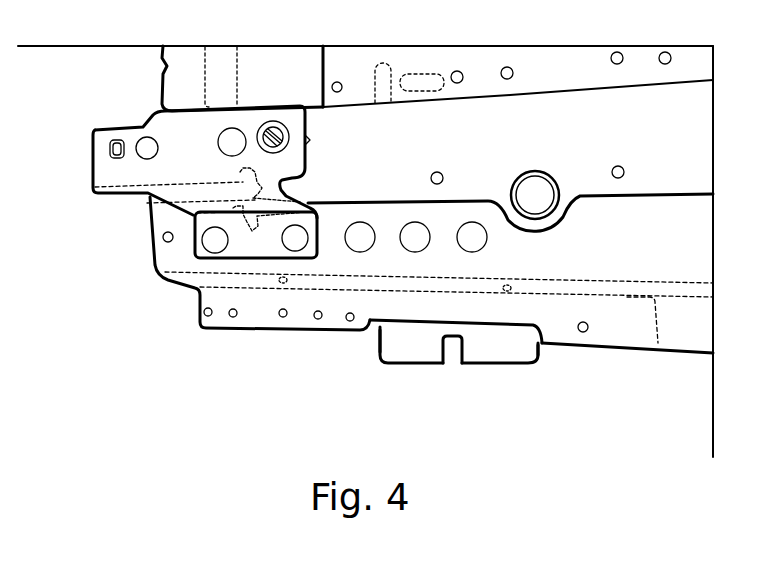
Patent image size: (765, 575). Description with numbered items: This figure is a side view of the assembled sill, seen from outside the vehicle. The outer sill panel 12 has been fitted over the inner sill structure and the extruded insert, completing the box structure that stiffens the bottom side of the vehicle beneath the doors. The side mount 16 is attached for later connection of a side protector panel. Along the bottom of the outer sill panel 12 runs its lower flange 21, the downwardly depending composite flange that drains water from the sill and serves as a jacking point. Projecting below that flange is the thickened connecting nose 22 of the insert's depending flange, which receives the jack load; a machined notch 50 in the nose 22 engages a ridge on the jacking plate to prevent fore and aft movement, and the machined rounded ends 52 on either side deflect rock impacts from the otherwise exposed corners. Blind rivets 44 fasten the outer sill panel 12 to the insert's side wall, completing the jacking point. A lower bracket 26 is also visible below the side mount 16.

The outer sill panel 12 is at (658, 175).
The side mount 16 is at (93, 193).
The lower flange 21 is at (692, 335).
The connecting nose 22 is at (511, 372).
The lower mounting bracket 26 is at (422, 329).
The rivets 44 is at (413, 243).
The notch 50 is at (457, 362).
The rounded ends 52 is at (380, 358).